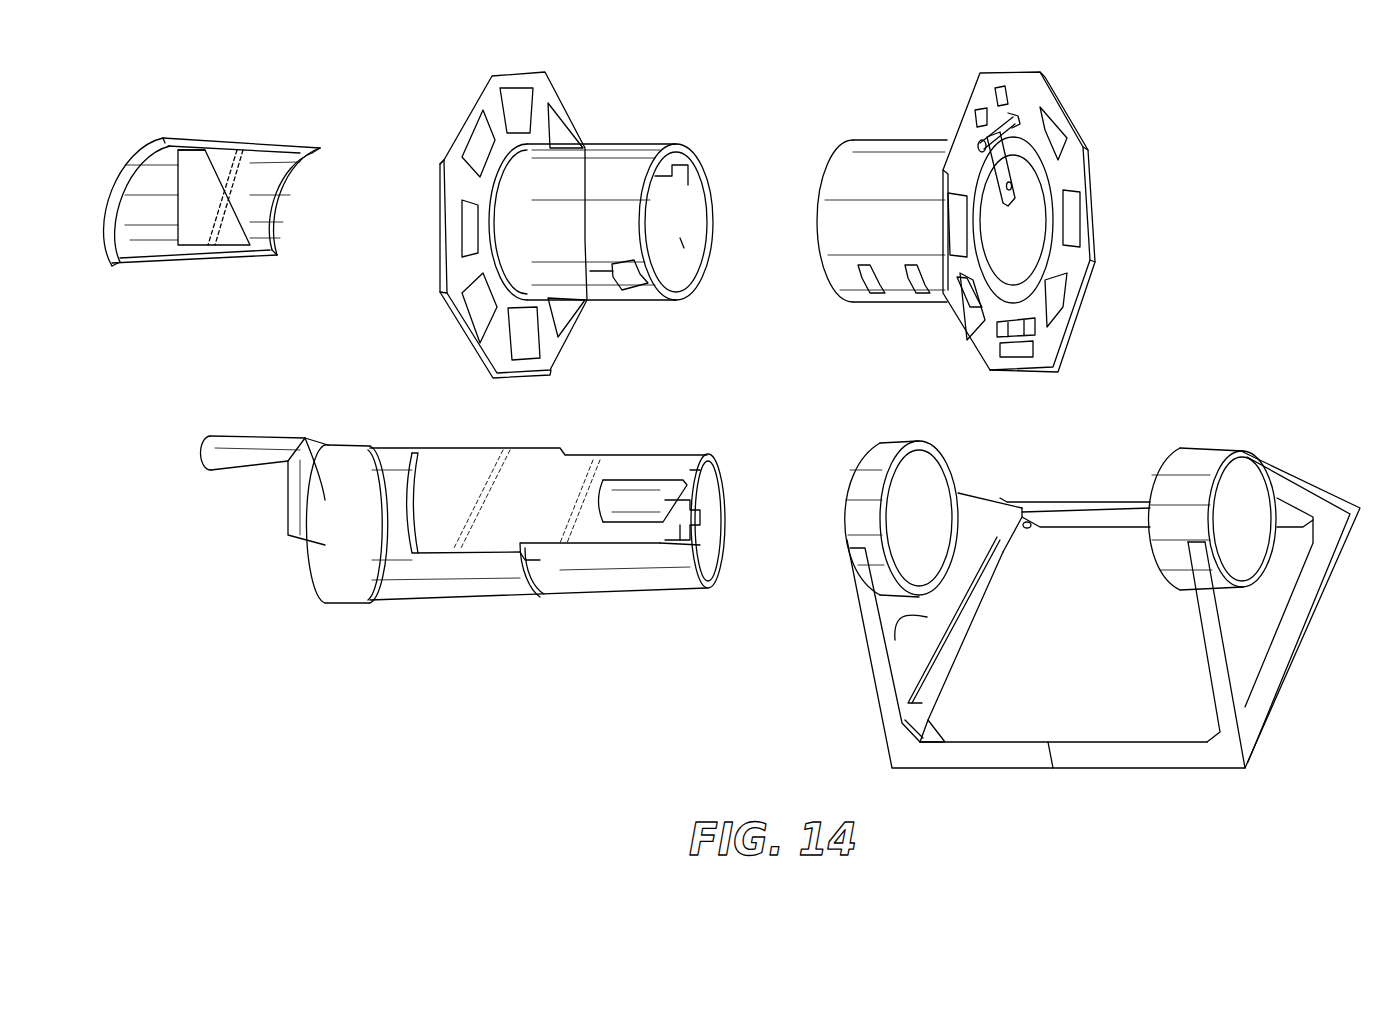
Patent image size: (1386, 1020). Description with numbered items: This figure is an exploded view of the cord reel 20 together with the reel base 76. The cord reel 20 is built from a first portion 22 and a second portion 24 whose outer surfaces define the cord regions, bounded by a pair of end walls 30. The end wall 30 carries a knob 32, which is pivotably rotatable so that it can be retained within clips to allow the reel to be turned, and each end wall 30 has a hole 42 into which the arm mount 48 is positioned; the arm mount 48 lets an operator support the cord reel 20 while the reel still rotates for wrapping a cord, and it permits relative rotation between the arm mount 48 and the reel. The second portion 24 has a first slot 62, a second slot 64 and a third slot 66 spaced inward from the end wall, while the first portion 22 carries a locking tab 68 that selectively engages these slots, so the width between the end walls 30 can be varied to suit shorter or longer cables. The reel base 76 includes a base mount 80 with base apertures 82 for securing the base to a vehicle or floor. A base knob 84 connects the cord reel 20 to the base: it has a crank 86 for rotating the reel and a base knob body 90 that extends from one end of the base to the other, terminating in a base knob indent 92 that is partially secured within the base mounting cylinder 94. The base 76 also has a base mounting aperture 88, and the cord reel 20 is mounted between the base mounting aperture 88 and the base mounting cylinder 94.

The cord reel 20 is at (790, 324).
The first portion 22 is at (612, 225).
The second portion 24 is at (899, 218).
The end wall 30 is at (1054, 222).
The knob 32 is at (1013, 200).
The hole 42 is at (684, 244).
The arm mount 48 is at (287, 148).
The first slot 62 is at (977, 297).
The second slot 64 is at (930, 298).
The third slot 66 is at (878, 298).
The locking tab 68 is at (604, 284).
The reel base 76 is at (1111, 614).
The base mount 80 is at (1123, 768).
The base aperture 82 is at (1030, 530).
The base knob 84 is at (448, 516).
The crank 86 is at (258, 436).
The base mounting aperture 88 is at (910, 517).
The base knob body 90 is at (503, 452).
The base knob indent 92 is at (620, 490).
The base mounting cylinder 94 is at (1243, 452).